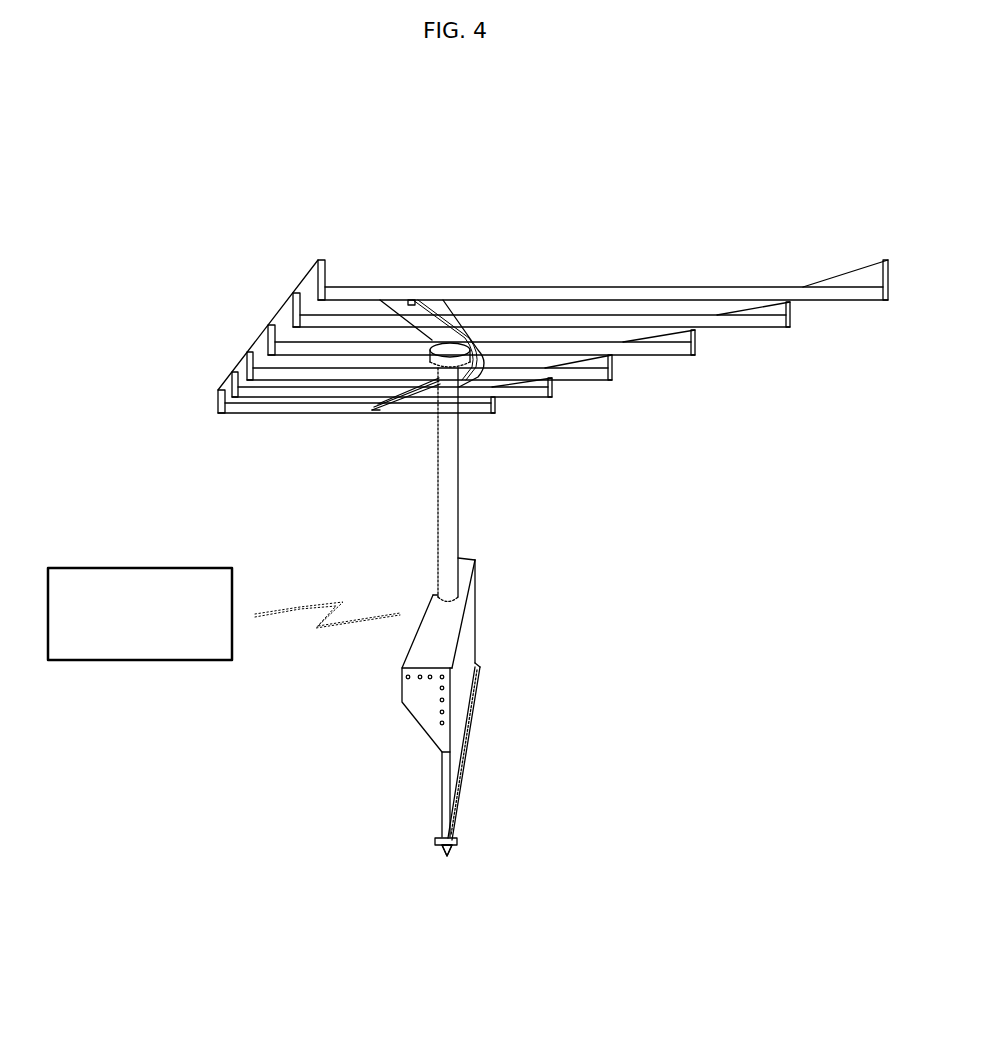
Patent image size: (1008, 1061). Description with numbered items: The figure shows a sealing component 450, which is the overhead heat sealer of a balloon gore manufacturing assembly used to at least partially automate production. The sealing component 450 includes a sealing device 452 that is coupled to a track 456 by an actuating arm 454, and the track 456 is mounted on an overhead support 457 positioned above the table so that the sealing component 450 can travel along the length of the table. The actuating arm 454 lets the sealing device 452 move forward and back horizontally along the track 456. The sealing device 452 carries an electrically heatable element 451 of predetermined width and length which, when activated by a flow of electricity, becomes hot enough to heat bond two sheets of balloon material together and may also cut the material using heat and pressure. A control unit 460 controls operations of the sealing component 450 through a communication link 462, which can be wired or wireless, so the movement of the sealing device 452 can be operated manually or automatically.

The sealing component 450 is at (745, 203).
The heatable element 451 is at (466, 844).
The sealing device 452 is at (466, 655).
The actuating arm 454 is at (468, 469).
The track 456 is at (462, 330).
The overhead support 457 is at (304, 278).
The control unit 460 is at (142, 567).
The communication link 462 is at (300, 607).